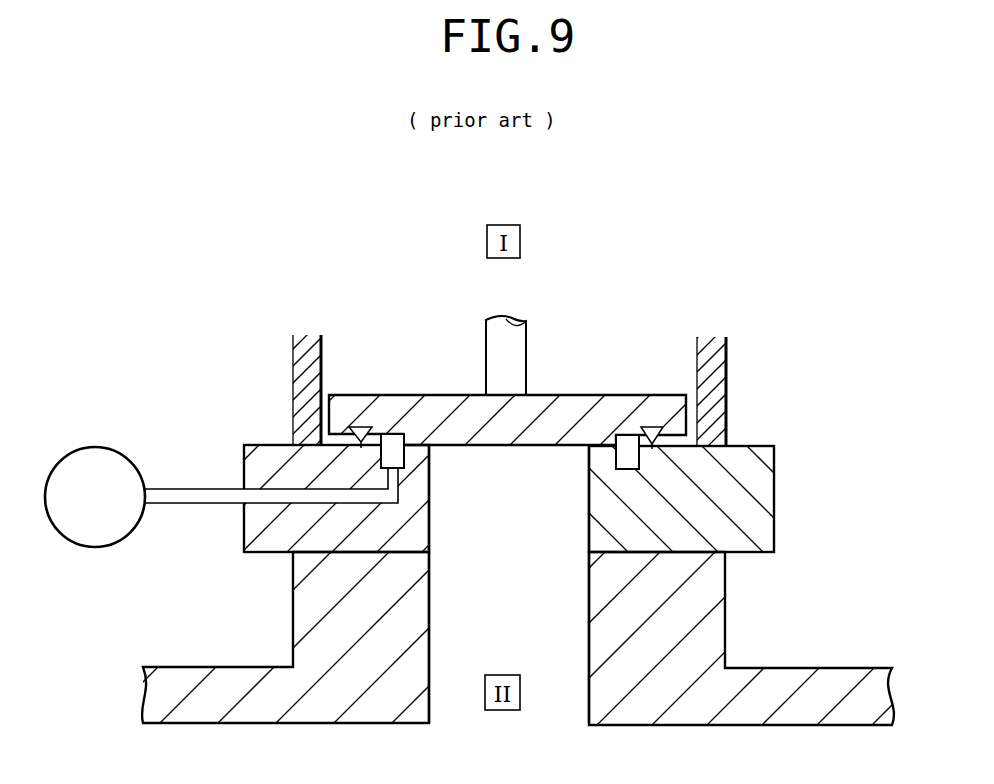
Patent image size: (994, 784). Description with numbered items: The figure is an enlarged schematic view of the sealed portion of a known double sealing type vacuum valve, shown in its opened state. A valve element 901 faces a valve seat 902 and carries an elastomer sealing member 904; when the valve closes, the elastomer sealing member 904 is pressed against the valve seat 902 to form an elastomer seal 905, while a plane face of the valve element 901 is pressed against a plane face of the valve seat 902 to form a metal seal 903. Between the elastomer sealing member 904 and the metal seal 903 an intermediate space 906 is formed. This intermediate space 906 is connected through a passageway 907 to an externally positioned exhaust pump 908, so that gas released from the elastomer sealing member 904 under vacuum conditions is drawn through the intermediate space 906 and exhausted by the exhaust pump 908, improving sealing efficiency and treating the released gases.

The valve element 901 is at (575, 408).
The valve seat 902 is at (762, 463).
The metal seal 903 is at (600, 456).
The elastomer sealing member 904 is at (358, 442).
The elastomer seal 905 is at (322, 428).
The intermediate space 906 is at (398, 438).
The passageway 907 is at (262, 472).
The exhaust pump 908 is at (99, 447).